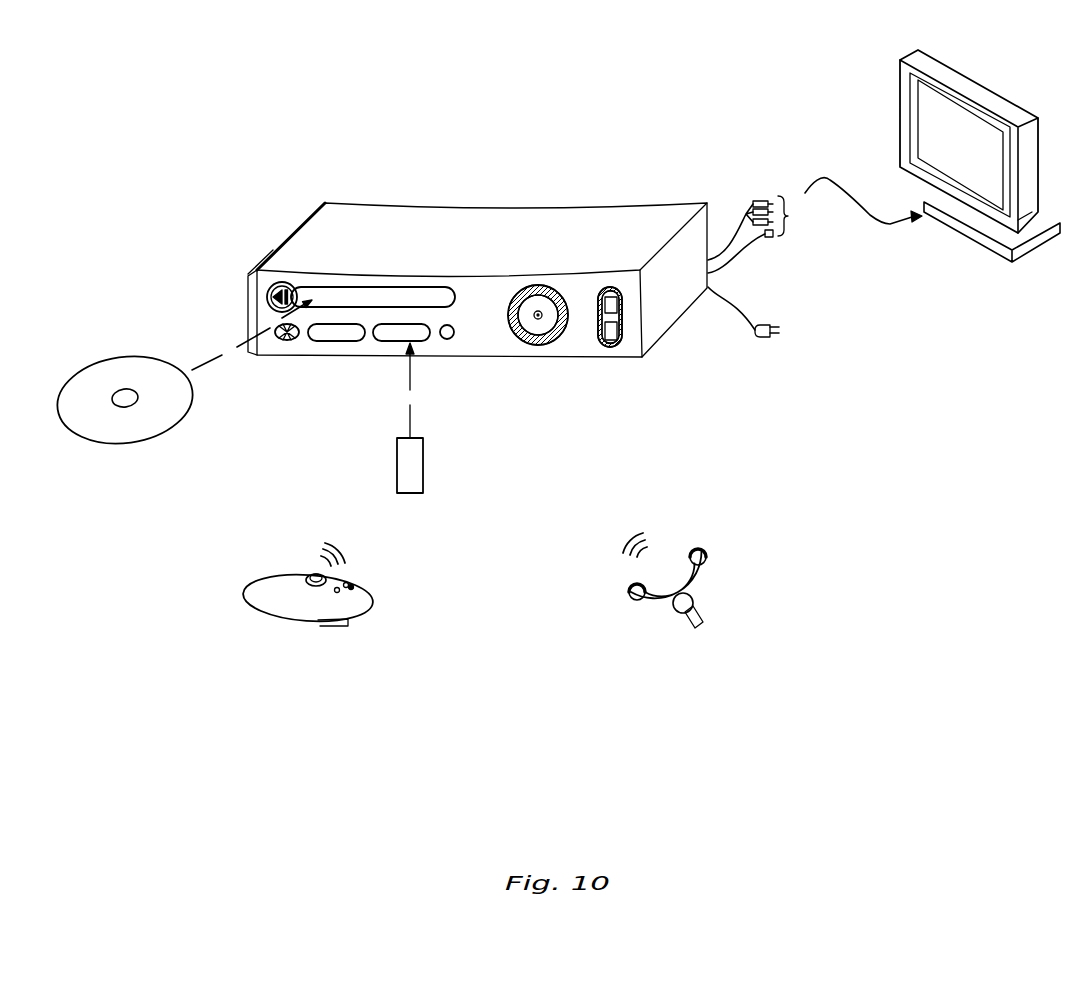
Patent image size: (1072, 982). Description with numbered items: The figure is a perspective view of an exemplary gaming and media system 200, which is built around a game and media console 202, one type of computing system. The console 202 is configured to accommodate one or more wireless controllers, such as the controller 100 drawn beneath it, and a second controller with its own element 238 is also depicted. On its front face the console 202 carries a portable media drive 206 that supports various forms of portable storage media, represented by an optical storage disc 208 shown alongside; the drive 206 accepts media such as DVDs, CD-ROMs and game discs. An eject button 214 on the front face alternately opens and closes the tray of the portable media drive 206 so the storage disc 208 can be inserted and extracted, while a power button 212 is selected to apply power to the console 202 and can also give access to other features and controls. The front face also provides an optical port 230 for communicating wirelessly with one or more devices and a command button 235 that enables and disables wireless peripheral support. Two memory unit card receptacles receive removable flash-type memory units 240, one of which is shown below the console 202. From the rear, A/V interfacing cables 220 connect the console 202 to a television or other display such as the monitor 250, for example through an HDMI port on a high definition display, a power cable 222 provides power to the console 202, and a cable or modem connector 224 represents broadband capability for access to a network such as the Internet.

The controller 100 is at (703, 628).
The gaming and media system 200 is at (506, 171).
The game and media console 202 is at (362, 213).
The portable media drive 206 is at (381, 287).
The optical storage disc 208 is at (132, 442).
The power button 212 is at (541, 346).
The eject button 214 is at (271, 295).
The A/V interfacing cables 220 is at (760, 201).
The power cable 222 is at (760, 335).
The cable or modem connector 224 is at (768, 237).
The optical port 230 is at (287, 341).
The command button 235 is at (447, 341).
The memory unit 238 is at (347, 638).
The removable flash-type memory unit 240 is at (410, 493).
The monitor 250 is at (897, 117).